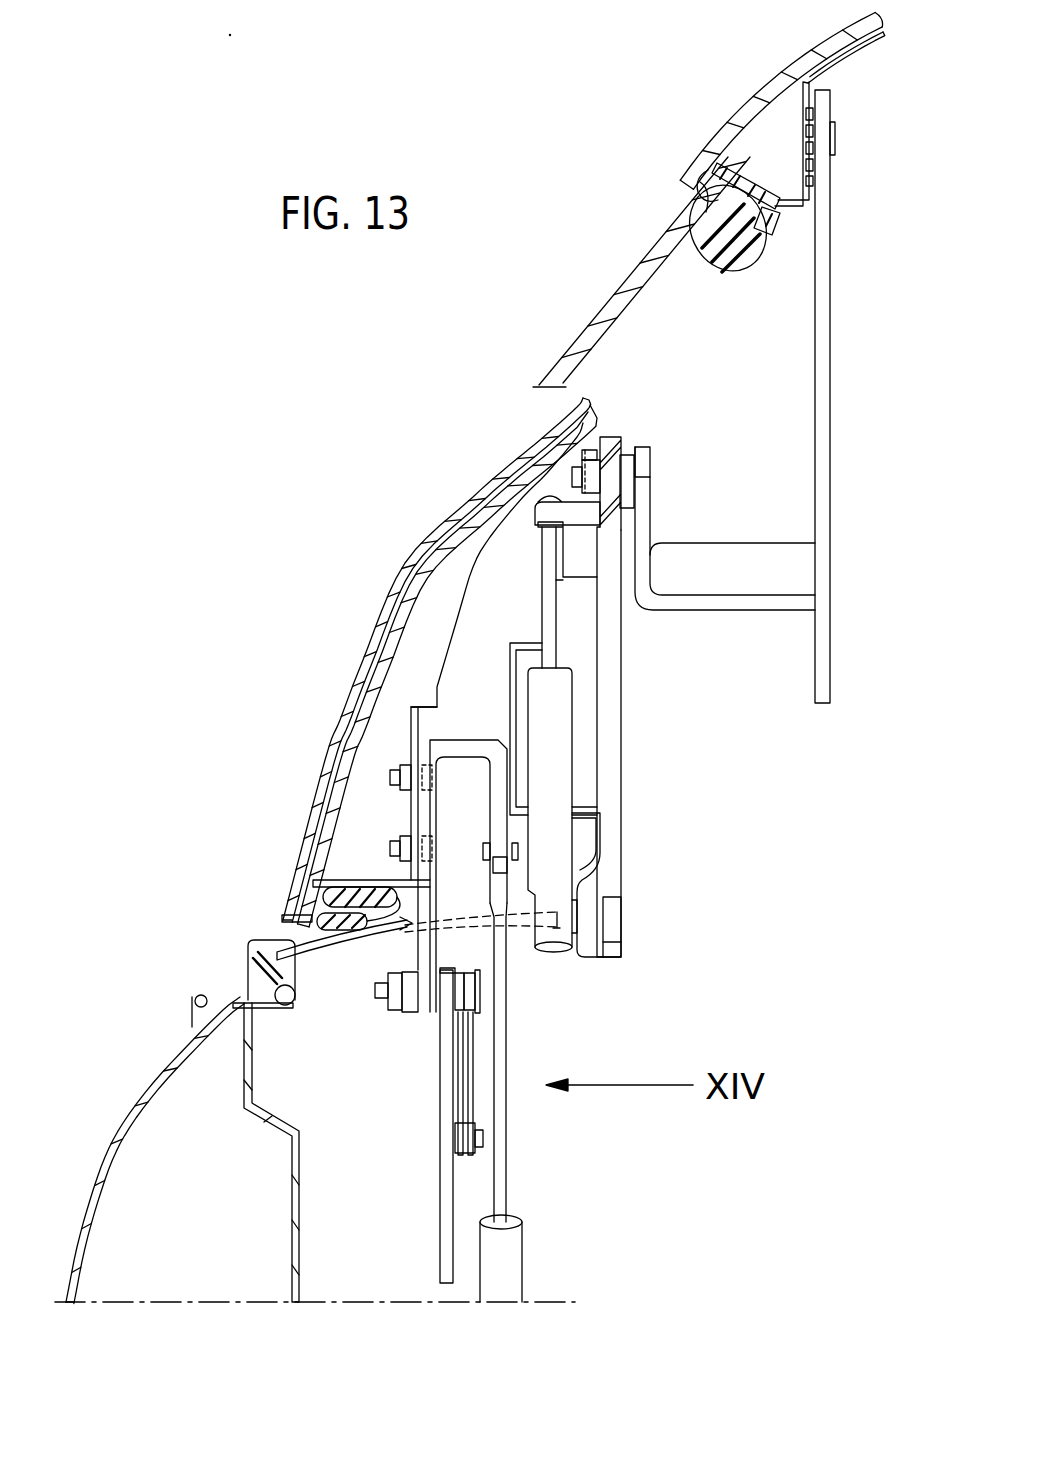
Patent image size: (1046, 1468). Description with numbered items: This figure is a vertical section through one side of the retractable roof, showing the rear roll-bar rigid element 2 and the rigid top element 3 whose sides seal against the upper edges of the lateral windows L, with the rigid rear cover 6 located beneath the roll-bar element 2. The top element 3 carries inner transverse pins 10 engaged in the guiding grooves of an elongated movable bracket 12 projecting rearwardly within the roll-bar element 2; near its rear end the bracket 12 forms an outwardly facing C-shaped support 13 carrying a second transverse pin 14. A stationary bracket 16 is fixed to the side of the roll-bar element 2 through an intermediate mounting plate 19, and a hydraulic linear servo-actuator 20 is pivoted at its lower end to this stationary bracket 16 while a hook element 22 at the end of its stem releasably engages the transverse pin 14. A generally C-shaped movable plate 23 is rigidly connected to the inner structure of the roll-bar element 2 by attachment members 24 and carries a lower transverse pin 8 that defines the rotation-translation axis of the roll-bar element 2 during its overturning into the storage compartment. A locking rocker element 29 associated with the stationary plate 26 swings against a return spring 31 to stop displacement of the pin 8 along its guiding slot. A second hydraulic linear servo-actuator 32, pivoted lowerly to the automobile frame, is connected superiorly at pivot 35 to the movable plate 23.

The rear roll-bar rigid element 2 is at (402, 558).
The rigid top element 3 is at (722, 108).
The lateral windows L is at (588, 305).
The rigid rear cover 6 is at (280, 953).
The lower transverse pin 8 is at (411, 1003).
The inner transverse pins 10 is at (806, 140).
The movable bracket 12 is at (842, 338).
The C-shaped support 13 is at (730, 610).
The second transverse pin 14 is at (613, 478).
The stationary bracket 16 is at (634, 680).
The intermediate mounting plate 19 is at (527, 642).
The linear servo-actuator 20 is at (575, 758).
The hook element 22 is at (574, 498).
The movable plate 23 is at (400, 818).
The attachment members 24 is at (410, 753).
The stationary plate 26 is at (430, 1150).
The locking rocker element 29 is at (472, 1043).
The return spring 31 is at (457, 1134).
The linear servo-actuator 32 is at (522, 1237).
The upper pivot 35 is at (575, 852).